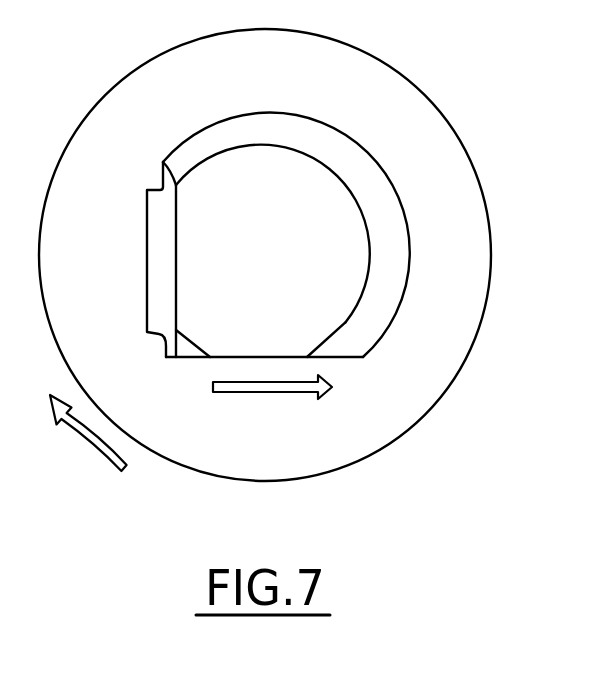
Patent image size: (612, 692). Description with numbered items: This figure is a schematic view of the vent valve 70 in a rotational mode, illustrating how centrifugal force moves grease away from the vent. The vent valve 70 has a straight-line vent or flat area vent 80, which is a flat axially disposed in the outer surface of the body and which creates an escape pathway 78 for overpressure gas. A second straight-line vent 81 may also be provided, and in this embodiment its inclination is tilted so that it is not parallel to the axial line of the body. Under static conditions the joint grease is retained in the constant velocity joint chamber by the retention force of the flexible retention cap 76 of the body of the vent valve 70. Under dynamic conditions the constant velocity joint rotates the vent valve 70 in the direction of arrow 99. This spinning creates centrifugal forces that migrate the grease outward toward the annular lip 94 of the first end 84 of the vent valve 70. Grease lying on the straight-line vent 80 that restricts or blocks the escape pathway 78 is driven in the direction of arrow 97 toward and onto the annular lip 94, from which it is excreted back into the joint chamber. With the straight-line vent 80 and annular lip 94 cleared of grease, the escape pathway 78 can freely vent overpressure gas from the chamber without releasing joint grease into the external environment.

The vent valve 70 is at (443, 93).
The flexible retention cap 76 is at (142, 65).
The escape pathway 78 is at (270, 370).
The straight-line vent 80 is at (353, 358).
The straight-line vent 81 is at (155, 245).
The first end 84 is at (350, 234).
The annular lip 94 is at (385, 334).
The arrow 97 is at (250, 393).
The arrow 99 is at (97, 458).